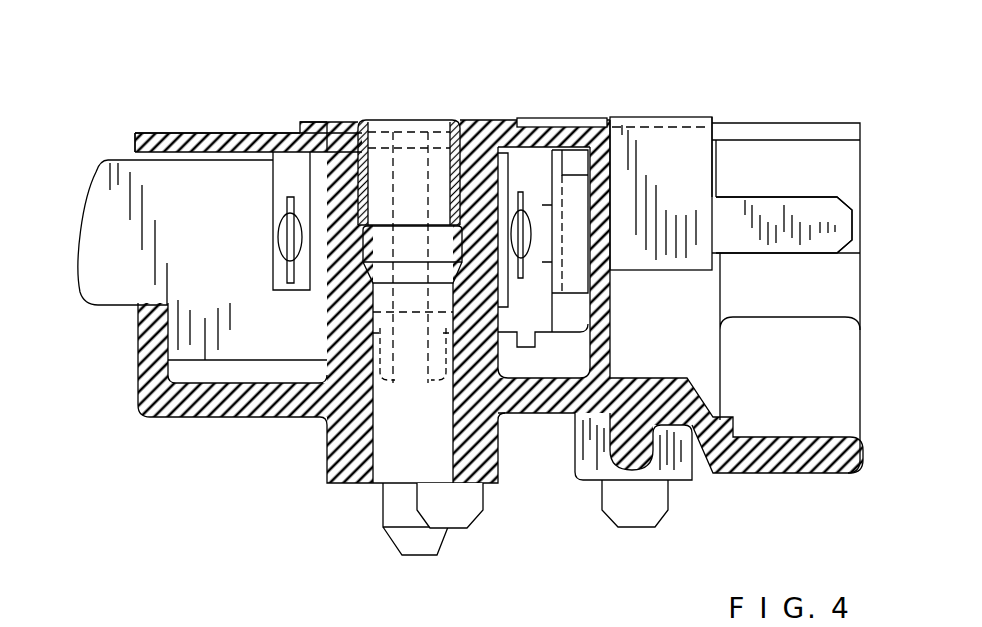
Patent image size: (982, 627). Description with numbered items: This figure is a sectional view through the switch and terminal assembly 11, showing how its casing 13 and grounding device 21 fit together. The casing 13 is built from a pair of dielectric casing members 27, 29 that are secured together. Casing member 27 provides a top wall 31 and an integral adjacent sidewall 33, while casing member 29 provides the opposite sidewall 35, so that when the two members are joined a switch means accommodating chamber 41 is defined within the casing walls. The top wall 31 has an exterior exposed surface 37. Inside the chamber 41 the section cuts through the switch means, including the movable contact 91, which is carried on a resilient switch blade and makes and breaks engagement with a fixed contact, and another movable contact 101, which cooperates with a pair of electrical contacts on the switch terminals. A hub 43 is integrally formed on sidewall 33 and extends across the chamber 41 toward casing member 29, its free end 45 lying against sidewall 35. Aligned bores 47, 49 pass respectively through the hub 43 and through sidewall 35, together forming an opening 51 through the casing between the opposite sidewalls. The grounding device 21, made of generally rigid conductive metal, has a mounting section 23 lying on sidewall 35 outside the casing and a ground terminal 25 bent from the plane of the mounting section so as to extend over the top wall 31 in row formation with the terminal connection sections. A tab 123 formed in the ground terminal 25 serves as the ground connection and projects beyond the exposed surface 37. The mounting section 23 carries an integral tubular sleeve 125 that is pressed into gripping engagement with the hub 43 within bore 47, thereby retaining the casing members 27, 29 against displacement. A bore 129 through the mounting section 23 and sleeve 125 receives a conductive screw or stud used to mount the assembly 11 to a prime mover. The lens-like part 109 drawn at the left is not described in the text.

The switch and terminal assembly 11 is at (735, 259).
The casing 13 is at (446, 318).
The grounding device 21 is at (390, 98).
The mounting section 23 is at (585, 122).
The ground terminal 25 is at (643, 274).
The casing member 27 is at (138, 396).
The casing member 29 is at (135, 137).
The top wall 31 is at (720, 381).
The sidewall 33 is at (262, 417).
The sidewall 35 is at (238, 132).
The exterior surface 37 is at (722, 168).
The switch means accommodating chamber 41 is at (556, 414).
The hub 43 is at (325, 331).
The free end 45 is at (320, 122).
The bore 47 is at (375, 416).
The bore 49 is at (363, 122).
The opening 51 is at (330, 486).
The movable contact 91 is at (285, 238).
The movable contact 101 is at (528, 211).
The lens cap 109 is at (87, 194).
The tab 123 is at (770, 242).
The sleeve 125 is at (372, 206).
The bore 129 is at (440, 120).